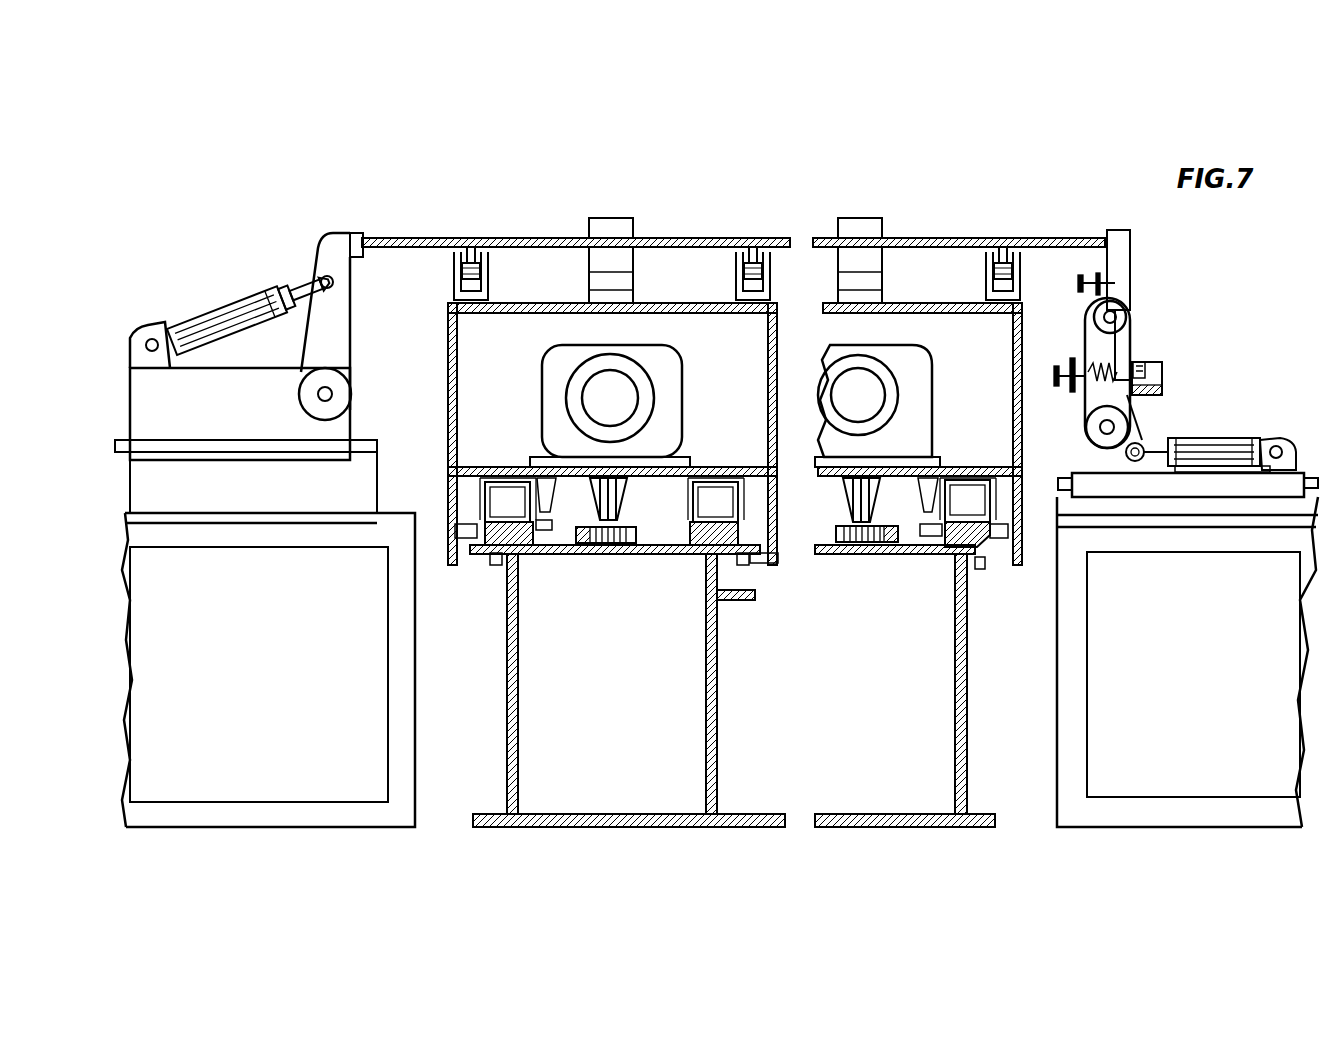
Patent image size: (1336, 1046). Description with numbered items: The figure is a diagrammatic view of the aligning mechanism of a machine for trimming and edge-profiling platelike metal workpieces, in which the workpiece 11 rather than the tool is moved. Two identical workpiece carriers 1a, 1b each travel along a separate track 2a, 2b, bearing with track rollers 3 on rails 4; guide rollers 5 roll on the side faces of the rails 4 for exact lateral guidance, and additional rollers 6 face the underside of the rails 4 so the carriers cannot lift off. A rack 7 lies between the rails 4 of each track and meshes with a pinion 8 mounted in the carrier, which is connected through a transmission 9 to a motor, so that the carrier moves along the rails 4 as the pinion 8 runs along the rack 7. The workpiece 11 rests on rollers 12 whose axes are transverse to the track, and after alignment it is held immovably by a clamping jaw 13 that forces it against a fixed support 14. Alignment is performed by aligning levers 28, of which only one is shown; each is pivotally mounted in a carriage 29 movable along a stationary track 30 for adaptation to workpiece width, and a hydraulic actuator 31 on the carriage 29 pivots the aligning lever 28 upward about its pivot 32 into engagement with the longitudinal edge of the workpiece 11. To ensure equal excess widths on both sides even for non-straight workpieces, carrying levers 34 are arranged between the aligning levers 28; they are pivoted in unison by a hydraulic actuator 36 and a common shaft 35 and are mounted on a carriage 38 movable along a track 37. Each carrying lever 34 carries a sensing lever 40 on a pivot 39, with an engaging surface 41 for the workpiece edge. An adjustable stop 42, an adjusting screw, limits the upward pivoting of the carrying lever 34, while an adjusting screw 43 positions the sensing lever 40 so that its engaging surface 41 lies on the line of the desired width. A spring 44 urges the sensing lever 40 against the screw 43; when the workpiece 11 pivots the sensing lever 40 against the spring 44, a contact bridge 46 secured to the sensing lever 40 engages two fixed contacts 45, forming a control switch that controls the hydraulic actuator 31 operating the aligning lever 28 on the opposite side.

The workpiece carrier 1a is at (912, 304).
The workpiece carrier 1b is at (447, 336).
The track 2a is at (860, 564).
The track 2b is at (636, 568).
The track rollers 3 is at (505, 500).
The rails 4 is at (507, 537).
The guide rollers 5 is at (470, 535).
The additional rollers 6 is at (497, 554).
The rack 7 is at (580, 542).
The pinion 8 is at (605, 542).
The transmission 9 is at (668, 382).
The workpiece 11 is at (990, 240).
The rollers 12 is at (470, 262).
The clamping jaw 13 is at (608, 228).
The fixed support 14 is at (622, 265).
The aligning lever 28 is at (335, 256).
The carriage 29 is at (230, 395).
The stationary track 30 is at (358, 468).
The hydraulic actuator 31 is at (228, 310).
The pivot 32 is at (331, 395).
The carrying lever 34 is at (1100, 400).
The common shaft 35 is at (1100, 428).
The hydraulic actuator 36 is at (1205, 445).
The track 37 is at (1308, 485).
The carriage 38 is at (1215, 490).
The pivot 39 is at (1115, 315).
The sensing lever 40 is at (1125, 243).
The engaging surface 41 is at (1105, 235).
The adjustable stop 42 is at (1057, 371).
The adjusting screw 43 is at (1078, 283).
The spring 44 is at (1098, 368).
The fixed contacts 45 is at (1143, 369).
The contact bridge 46 is at (1136, 362).